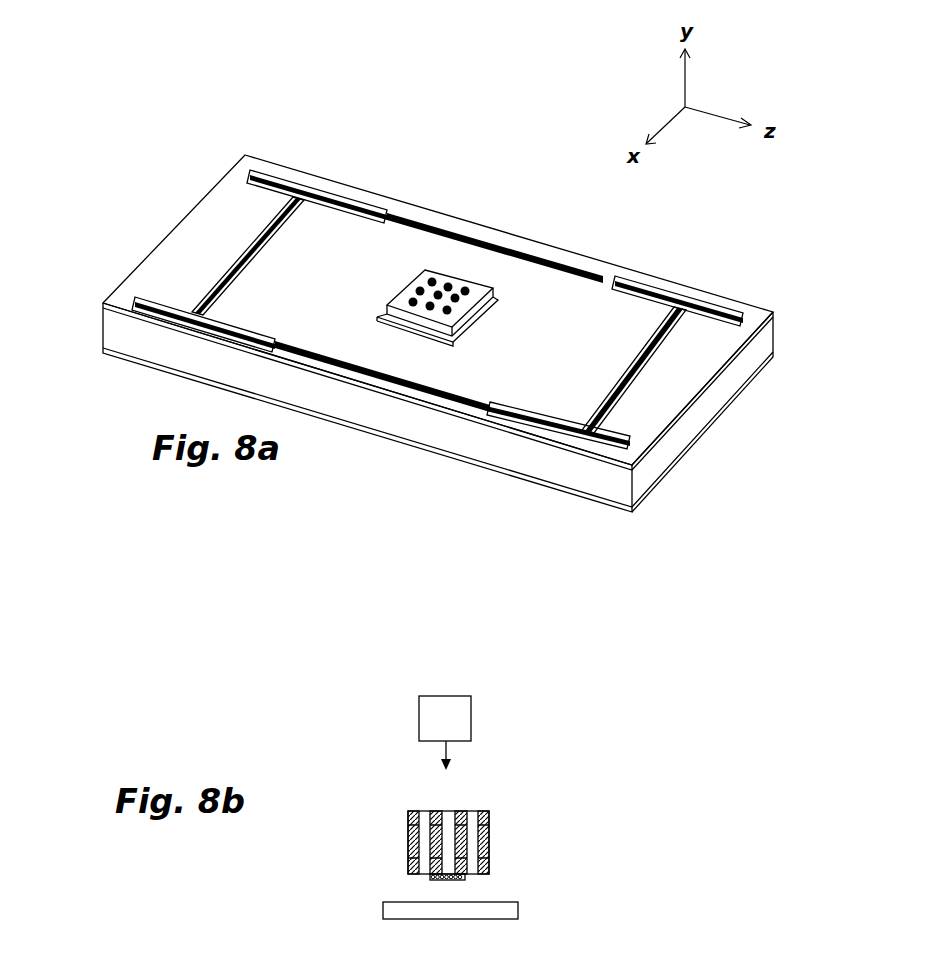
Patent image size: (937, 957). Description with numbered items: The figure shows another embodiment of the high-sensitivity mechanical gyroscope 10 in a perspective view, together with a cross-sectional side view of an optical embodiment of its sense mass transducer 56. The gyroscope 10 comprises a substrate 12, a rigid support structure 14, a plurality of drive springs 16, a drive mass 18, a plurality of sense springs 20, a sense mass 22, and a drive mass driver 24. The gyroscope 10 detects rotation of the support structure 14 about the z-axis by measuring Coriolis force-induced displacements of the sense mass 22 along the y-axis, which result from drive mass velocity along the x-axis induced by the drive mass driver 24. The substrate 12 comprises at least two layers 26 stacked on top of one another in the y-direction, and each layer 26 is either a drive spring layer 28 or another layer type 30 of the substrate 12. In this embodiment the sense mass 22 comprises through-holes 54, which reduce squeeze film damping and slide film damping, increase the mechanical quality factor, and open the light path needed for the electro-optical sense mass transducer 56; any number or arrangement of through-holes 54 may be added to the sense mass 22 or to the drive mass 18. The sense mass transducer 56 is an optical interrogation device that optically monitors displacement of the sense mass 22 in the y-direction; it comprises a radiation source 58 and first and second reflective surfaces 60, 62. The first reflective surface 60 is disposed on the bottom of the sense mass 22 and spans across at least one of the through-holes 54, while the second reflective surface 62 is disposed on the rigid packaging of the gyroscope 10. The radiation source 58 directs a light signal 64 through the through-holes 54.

In FIG. 8A, the gyroscope 10 is at (196, 69).
In FIG. 8A, the substrate 12 is at (102, 302).
In FIG. 8A, the rigid support structure 14 is at (150, 253).
In FIG. 8A, the drive springs 16 is at (328, 202).
In FIG. 8A, the drive mass 18 is at (268, 228).
In FIG. 8A, the sense springs 20 is at (386, 304).
In FIG. 8A, the sense mass 22 is at (472, 277).
In FIG. 8A, the drive mass driver 24 is at (601, 265).
In FIG. 8A, the layers 26 is at (465, 397).
In FIG. 8A, the drive spring layer 28 is at (775, 337).
In FIG. 8B, the drive spring layer 28 is at (408, 840).
In FIG. 8A, the outer layer 30 is at (774, 312).
In FIG. 8B, the outer layer 30 is at (408, 818).
In FIG. 8A, the through-holes 54 is at (425, 270).
In FIG. 8B, the through-holes 54 is at (468, 811).
In FIG. 8B, the sense mass transducer 56 is at (589, 720).
In FIG. 8B, the radiation source 58 is at (419, 718).
In FIG. 8B, the first reflective surface 60 is at (468, 879).
In FIG. 8B, the second reflective surface 62 is at (518, 905).
In FIG. 8B, the light signal 64 is at (446, 752).